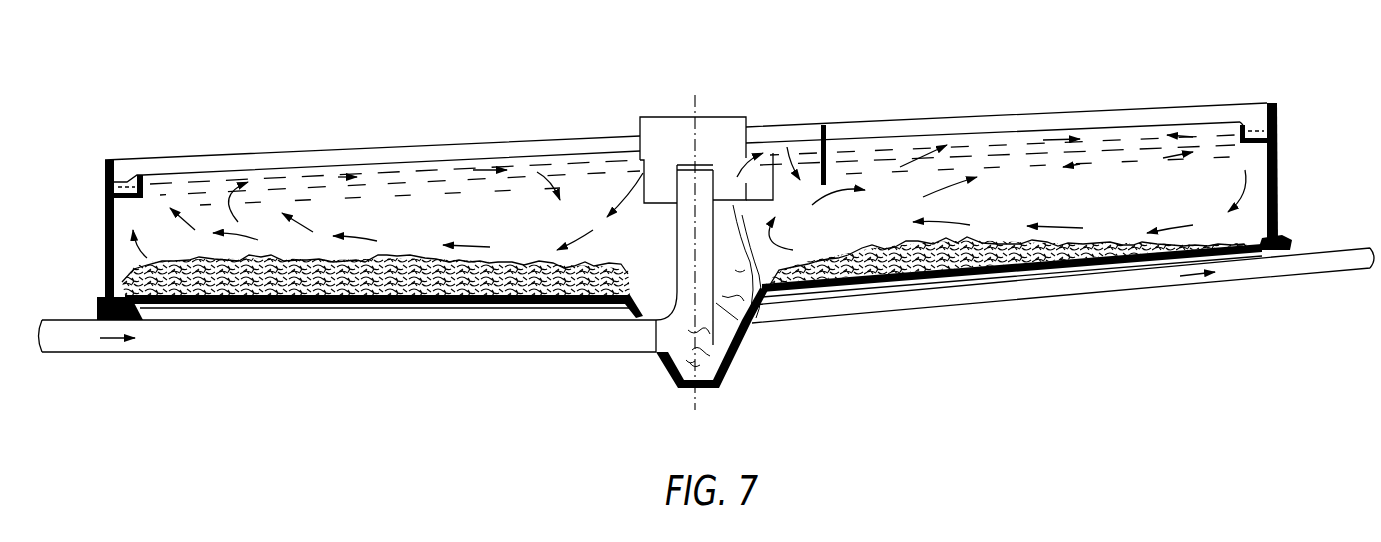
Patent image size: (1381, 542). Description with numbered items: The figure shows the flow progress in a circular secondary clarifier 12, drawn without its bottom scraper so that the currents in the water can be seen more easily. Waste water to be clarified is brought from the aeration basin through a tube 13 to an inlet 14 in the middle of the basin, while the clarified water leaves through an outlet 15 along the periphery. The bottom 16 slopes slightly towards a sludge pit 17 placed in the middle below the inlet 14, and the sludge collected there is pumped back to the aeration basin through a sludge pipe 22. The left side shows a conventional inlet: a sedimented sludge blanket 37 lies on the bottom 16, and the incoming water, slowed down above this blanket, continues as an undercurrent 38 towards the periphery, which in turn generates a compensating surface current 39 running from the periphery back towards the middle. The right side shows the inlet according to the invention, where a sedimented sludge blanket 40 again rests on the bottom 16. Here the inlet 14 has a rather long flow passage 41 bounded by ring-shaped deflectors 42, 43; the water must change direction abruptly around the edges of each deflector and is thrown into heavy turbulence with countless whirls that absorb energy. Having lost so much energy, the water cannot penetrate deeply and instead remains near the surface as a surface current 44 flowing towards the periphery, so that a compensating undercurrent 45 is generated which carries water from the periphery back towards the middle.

The circular secondary clarifier 12 is at (550, 122).
The tube 13 is at (336, 340).
The inlet 14 is at (653, 117).
The outlet 15 is at (125, 178).
The bottom 16 is at (412, 285).
The sludge pit 17 is at (670, 377).
The sludge pipe 22 is at (1259, 268).
The sedimented sludge blanket 37 is at (290, 278).
The undercurrent 38 is at (393, 237).
The surface current 39 is at (290, 168).
The sedimented sludge blanket 40 is at (867, 268).
The flow passage 41 is at (745, 168).
The ring-shaped deflector 42 is at (777, 163).
The ring-shaped deflector 43 is at (827, 160).
The surface current 44 is at (1000, 140).
The undercurrent 45 is at (1013, 233).